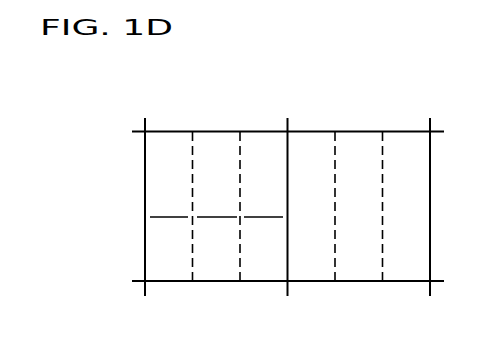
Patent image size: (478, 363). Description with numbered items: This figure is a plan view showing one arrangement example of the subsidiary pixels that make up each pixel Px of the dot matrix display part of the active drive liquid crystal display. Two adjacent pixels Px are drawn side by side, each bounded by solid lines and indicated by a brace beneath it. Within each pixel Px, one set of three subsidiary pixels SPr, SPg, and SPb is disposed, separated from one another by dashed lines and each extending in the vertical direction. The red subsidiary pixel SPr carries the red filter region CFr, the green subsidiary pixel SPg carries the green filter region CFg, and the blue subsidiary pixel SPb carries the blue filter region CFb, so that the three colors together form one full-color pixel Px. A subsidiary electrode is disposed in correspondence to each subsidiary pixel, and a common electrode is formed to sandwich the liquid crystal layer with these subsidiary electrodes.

The red subsidiary pixel SPr is at (165, 154).
The green subsidiary pixel SPg is at (215, 154).
The blue subsidiary pixel SPb is at (260, 154).
The red filter region CFr is at (169, 205).
The green filter region CFg is at (217, 205).
The blue filter region CFb is at (263, 205).
The pixel Px is at (286, 286).